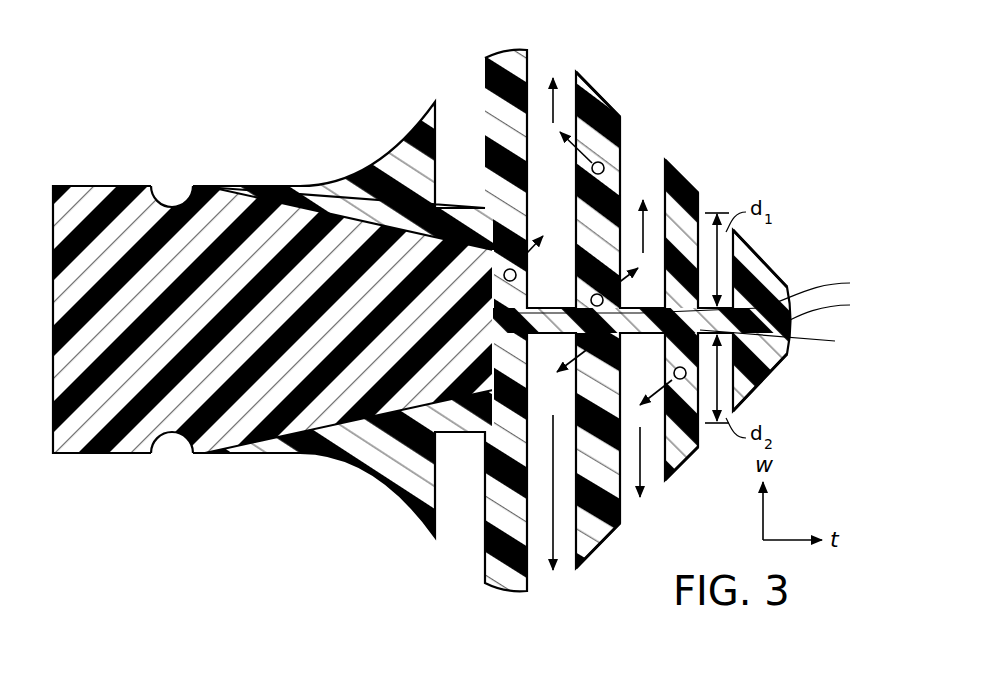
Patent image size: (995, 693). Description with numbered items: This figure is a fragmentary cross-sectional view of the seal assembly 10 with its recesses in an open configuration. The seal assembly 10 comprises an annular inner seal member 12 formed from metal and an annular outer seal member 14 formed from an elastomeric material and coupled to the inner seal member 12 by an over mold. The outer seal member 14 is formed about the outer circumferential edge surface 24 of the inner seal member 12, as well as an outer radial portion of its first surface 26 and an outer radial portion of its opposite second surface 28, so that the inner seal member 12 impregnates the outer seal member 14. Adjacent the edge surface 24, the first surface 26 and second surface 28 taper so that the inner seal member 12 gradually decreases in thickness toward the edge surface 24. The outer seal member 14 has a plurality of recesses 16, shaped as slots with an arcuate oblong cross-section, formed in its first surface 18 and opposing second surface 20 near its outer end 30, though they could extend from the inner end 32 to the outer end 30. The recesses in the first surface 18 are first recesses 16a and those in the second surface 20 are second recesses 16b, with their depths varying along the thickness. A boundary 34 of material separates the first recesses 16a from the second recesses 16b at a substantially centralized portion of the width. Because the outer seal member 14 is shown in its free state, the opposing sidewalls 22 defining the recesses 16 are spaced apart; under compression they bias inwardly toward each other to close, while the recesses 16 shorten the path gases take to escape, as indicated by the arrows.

The seal assembly 10 is at (104, 64).
The inner seal member 12 is at (254, 322).
The outer seal member 14 is at (783, 277).
The recesses 16 is at (493, 328).
The first recesses 16a is at (460, 208).
The second recesses 16b is at (533, 333).
The first surface 18 is at (681, 172).
The second surface 20 is at (683, 478).
The sidewalls 22 is at (438, 470).
The outer circumferential edge surface 24 is at (679, 320).
The first surface 26 is at (77, 186).
The second surface 28 is at (77, 453).
The outer end 30 is at (835, 304).
The inner end 32 is at (198, 186).
The boundary 34 is at (699, 290).